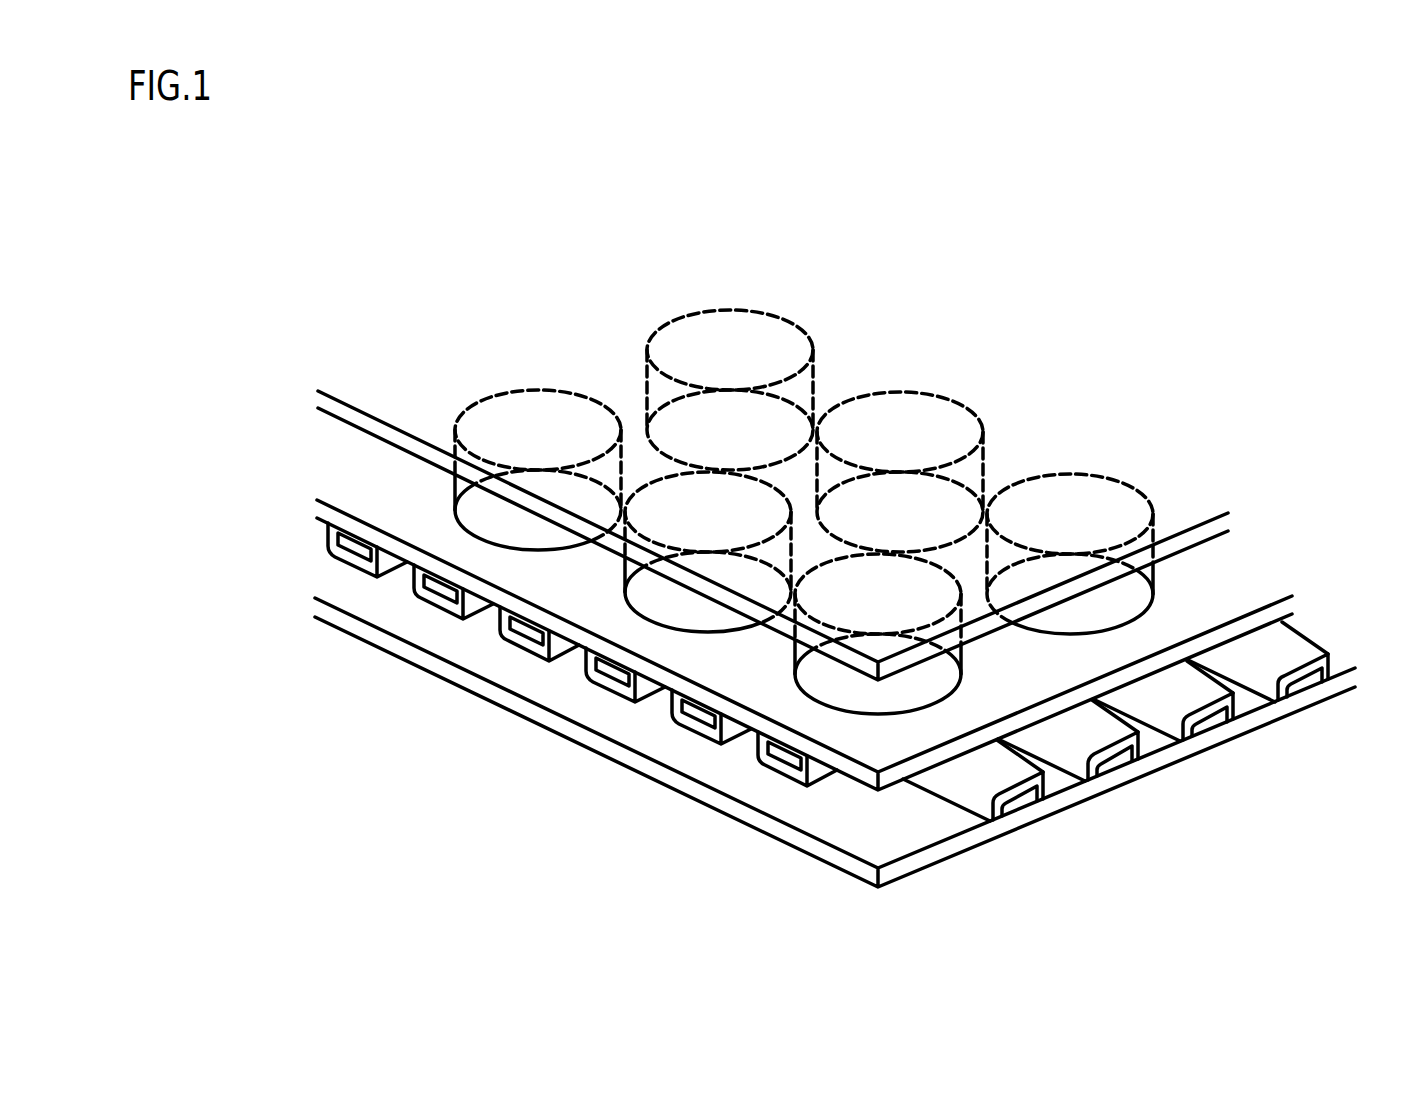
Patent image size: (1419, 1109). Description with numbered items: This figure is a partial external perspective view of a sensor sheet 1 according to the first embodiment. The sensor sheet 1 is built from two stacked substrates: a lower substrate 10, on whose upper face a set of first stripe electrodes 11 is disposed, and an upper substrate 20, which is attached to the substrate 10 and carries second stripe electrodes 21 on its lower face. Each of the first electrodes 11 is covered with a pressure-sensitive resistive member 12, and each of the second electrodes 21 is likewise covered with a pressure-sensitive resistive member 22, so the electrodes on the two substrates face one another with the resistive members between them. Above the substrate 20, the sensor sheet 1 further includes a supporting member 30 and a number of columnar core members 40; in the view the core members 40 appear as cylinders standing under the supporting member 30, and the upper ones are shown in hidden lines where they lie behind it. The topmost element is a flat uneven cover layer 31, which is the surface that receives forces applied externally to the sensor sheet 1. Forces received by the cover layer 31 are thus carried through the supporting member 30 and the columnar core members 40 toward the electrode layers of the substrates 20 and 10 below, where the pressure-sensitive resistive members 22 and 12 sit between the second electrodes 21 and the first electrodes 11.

The sensor sheet 1 is at (1144, 296).
The substrate 10 is at (850, 862).
The first stripe electrodes 11 is at (1022, 802).
The pressure-sensitive resistive member 12 is at (972, 788).
The substrate 20 is at (582, 708).
The second stripe electrodes 21 is at (442, 587).
The pressure-sensitive resistive member 22 is at (707, 730).
The supporting member 30 is at (358, 477).
The cover layer 31 is at (330, 404).
The columnar core members 40 is at (710, 622).